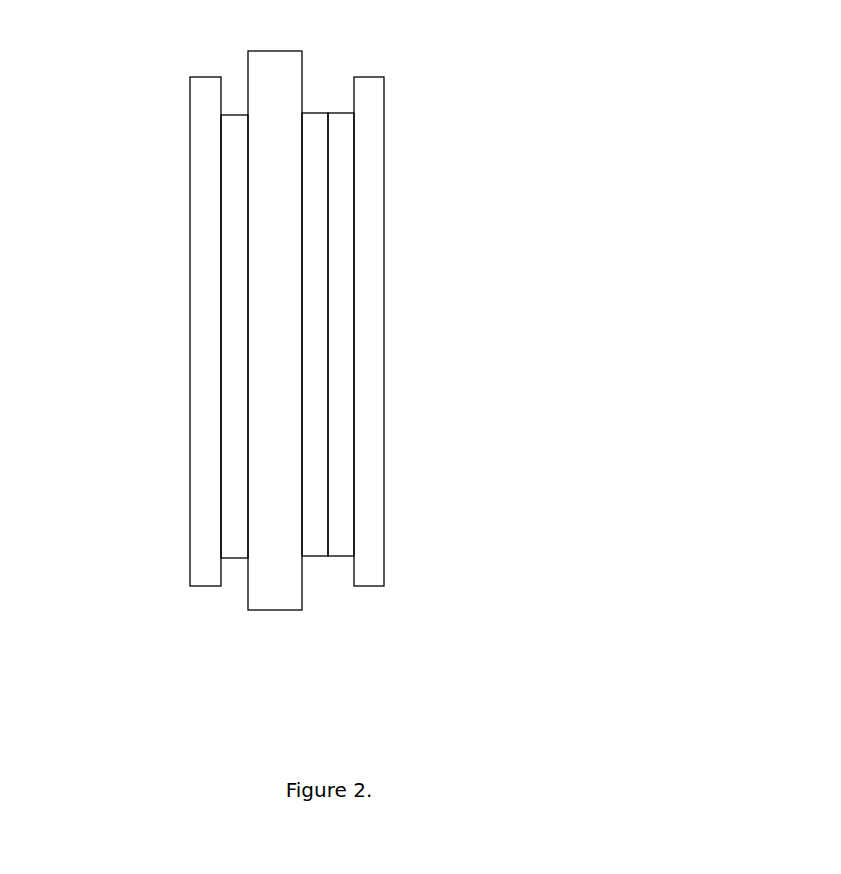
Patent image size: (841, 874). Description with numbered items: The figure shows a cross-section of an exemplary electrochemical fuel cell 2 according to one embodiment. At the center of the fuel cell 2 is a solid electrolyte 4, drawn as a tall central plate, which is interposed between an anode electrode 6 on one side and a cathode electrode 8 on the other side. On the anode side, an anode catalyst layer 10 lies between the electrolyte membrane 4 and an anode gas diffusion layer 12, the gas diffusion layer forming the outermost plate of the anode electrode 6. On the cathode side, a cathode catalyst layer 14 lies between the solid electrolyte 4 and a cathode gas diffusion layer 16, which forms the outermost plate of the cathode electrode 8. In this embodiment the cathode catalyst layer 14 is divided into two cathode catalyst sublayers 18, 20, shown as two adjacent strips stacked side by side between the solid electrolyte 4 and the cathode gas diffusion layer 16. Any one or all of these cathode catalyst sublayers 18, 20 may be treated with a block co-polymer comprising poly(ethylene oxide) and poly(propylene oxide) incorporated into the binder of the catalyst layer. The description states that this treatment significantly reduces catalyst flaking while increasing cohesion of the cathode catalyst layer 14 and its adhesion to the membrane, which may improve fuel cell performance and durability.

The electrochemical fuel cell 2 is at (562, 134).
The solid electrolyte 4 is at (286, 66).
The anode electrode 6 is at (191, 598).
The cathode electrode 8 is at (388, 651).
The anode catalyst layer 10 is at (215, 224).
The anode gas diffusion layer 12 is at (185, 90).
The cathode catalyst layer 14 is at (303, 581).
The cathode gas diffusion layer 16 is at (379, 100).
The cathode catalyst sublayer 18 is at (327, 336).
The cathode catalyst sublayer 20 is at (346, 406).